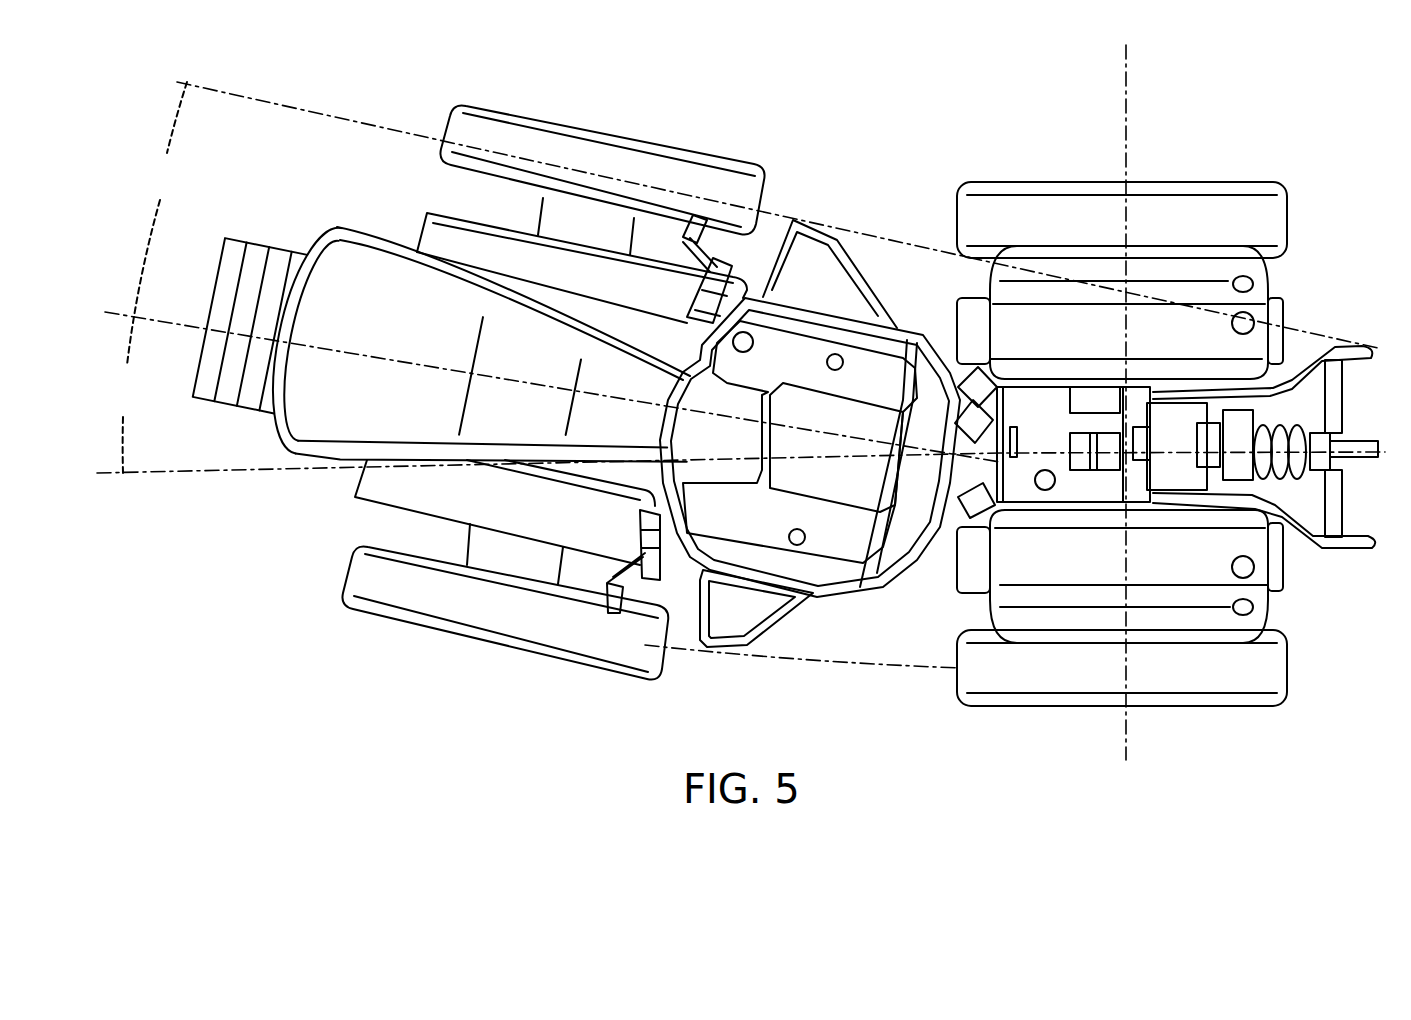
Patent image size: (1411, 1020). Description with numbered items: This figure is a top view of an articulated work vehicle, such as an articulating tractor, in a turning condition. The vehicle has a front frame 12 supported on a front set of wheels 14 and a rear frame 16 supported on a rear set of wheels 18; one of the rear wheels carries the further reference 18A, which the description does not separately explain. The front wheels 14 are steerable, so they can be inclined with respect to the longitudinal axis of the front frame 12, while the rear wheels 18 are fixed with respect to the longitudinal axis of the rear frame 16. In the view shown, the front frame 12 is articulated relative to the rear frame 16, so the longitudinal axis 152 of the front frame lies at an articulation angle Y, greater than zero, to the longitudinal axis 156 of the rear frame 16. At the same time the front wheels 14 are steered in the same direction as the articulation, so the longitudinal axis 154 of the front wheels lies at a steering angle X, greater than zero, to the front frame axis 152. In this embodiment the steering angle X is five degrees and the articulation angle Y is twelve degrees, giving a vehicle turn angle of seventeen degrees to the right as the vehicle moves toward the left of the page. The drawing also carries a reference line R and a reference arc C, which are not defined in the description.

The front frame 12 is at (773, 627).
The front wheels 14 is at (357, 613).
The rear frame 16 is at (1287, 604).
The rear wheels 18 is at (1273, 221).
The rear wheel 18A is at (1273, 667).
The longitudinal axis of the front frame 152 is at (162, 316).
The longitudinal axis of the front wheels 154 is at (345, 117).
The longitudinal axis of the rear frame 156 is at (1380, 443).
The steering angle X is at (173, 137).
The articulation angle Y is at (741, 336).
The rear axle centerline R is at (1129, 128).
The arc C is at (827, 667).